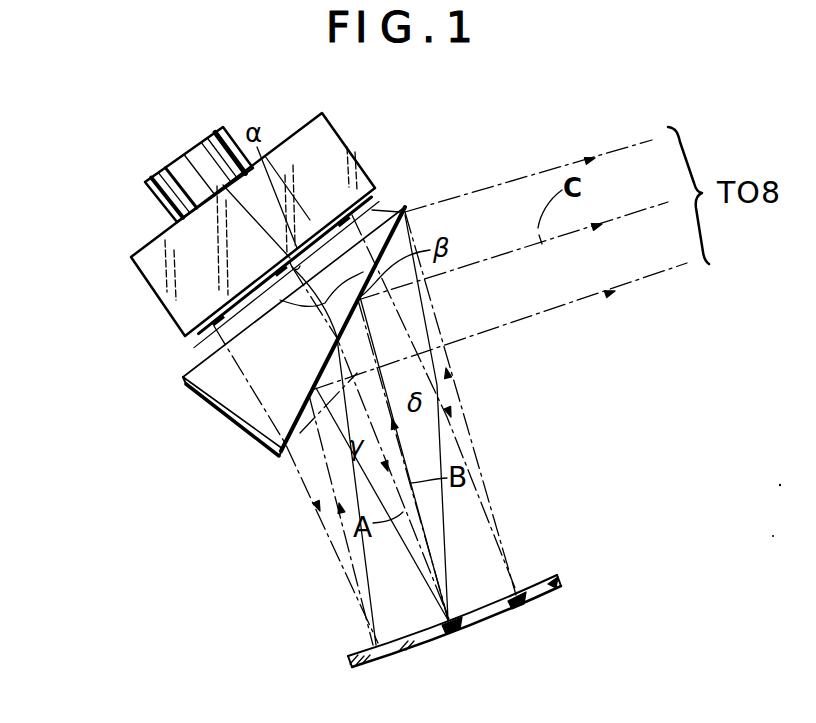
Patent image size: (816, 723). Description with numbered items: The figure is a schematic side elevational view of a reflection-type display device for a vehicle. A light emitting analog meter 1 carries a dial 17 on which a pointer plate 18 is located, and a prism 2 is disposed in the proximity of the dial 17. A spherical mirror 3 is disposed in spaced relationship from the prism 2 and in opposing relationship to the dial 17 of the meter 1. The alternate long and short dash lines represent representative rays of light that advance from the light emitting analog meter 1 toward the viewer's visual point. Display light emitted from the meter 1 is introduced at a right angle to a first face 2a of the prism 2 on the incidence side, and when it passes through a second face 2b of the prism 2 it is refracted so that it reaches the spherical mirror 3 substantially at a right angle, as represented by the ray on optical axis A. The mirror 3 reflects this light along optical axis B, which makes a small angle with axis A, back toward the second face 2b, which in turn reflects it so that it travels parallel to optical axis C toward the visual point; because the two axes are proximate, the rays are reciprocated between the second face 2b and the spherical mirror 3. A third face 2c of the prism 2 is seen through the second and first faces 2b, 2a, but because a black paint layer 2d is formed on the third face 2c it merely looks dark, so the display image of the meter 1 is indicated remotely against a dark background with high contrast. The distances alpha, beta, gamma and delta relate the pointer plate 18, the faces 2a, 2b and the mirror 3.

The light emitting analog meter 1 is at (181, 320).
The pointer plate 18 is at (238, 303).
The prism 2 is at (250, 376).
The first face 2a is at (190, 363).
The second face 2b is at (295, 436).
The third face 2c is at (212, 382).
The black paint layer 2d is at (250, 428).
The dial 17 is at (373, 208).
The spherical mirror 3 is at (342, 659).